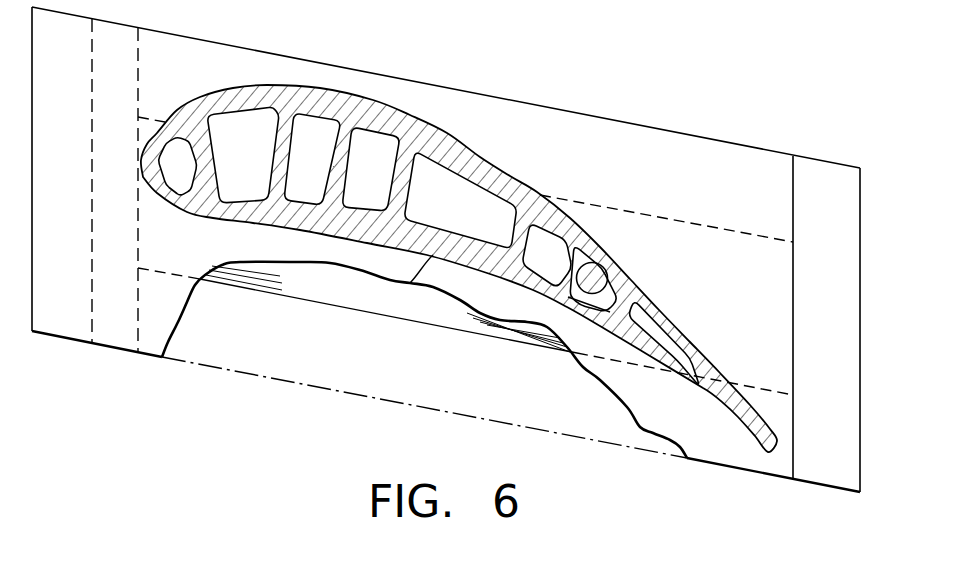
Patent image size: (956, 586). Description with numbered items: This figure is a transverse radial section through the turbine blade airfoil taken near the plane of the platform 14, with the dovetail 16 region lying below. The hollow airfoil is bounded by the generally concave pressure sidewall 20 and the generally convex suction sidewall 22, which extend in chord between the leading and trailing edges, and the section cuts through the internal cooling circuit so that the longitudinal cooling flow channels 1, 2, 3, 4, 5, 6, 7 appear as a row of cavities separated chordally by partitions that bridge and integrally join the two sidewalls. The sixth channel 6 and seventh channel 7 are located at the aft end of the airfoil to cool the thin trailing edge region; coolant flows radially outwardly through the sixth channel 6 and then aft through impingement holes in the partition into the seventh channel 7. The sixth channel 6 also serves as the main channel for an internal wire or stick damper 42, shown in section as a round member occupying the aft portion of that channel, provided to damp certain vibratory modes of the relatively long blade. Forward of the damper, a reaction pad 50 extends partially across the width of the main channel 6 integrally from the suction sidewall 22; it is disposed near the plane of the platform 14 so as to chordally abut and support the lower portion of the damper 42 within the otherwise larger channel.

The first cooling flow channel 1 is at (188, 168).
The second cooling flow channel 2 is at (249, 143).
The third cooling flow channel 3 is at (323, 147).
The fourth cooling flow channel 4 is at (380, 164).
The fifth cooling flow channel 5 is at (452, 197).
The sixth cooling flow channel 6 is at (550, 249).
The seventh cooling flow channel 7 is at (645, 323).
The platform 14 is at (742, 190).
The dovetail 16 is at (450, 330).
The pressure sidewall 20 is at (410, 283).
The suction sidewall 22 is at (483, 158).
The stick damper 42 is at (604, 271).
The reaction pad 50 is at (563, 290).